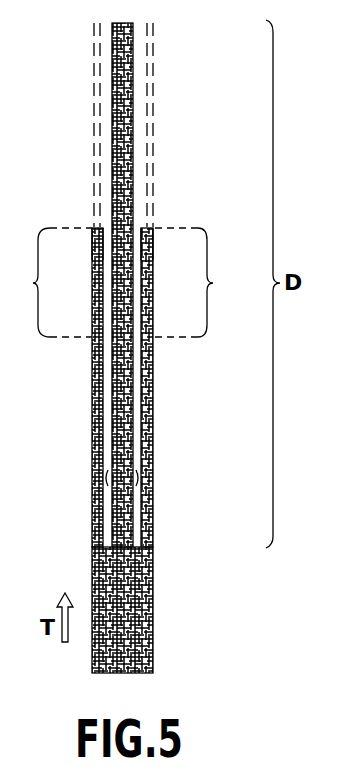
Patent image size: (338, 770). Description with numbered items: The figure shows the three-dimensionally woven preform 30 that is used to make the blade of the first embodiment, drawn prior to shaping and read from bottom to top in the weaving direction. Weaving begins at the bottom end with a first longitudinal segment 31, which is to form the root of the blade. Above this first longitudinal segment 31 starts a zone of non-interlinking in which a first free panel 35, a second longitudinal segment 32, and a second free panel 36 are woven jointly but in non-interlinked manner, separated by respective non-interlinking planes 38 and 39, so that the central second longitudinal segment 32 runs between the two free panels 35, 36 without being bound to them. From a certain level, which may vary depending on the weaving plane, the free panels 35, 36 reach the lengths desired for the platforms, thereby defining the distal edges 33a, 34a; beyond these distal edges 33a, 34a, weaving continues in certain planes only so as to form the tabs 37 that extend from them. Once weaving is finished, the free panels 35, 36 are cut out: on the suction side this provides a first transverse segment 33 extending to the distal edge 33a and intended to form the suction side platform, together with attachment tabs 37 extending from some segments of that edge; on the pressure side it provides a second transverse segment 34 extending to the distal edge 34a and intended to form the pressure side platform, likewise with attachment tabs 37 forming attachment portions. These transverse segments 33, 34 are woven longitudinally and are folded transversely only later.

The preform 30 is at (175, 165).
The first longitudinal segment 31 is at (153, 637).
The second longitudinal segment 32 is at (133, 118).
The first transverse segment 33 is at (153, 517).
The distal edge 33a is at (153, 350).
The second transverse segment 34 is at (92, 517).
The distal edge 34a is at (92, 352).
The first free panel 35 is at (152, 65).
The second free panel 36 is at (97, 88).
The attachment tabs 37 is at (122, 282).
The non-interlinking plane 38 is at (155, 474).
The non-interlinking plane 39 is at (95, 474).